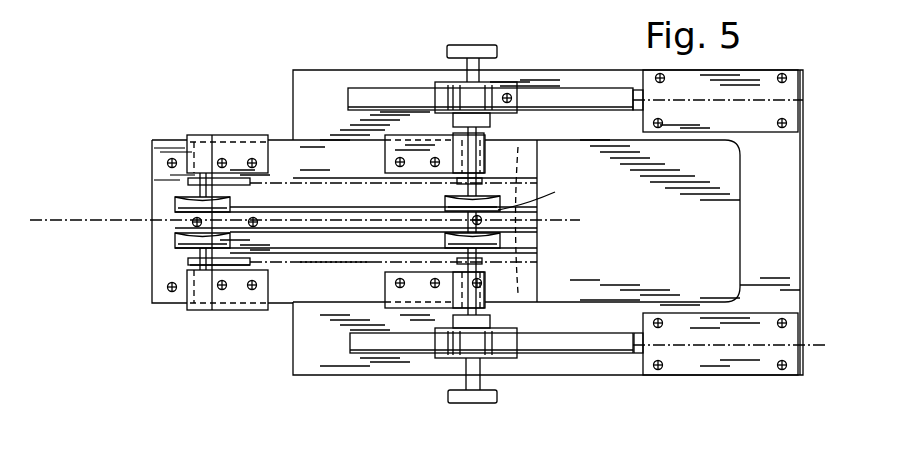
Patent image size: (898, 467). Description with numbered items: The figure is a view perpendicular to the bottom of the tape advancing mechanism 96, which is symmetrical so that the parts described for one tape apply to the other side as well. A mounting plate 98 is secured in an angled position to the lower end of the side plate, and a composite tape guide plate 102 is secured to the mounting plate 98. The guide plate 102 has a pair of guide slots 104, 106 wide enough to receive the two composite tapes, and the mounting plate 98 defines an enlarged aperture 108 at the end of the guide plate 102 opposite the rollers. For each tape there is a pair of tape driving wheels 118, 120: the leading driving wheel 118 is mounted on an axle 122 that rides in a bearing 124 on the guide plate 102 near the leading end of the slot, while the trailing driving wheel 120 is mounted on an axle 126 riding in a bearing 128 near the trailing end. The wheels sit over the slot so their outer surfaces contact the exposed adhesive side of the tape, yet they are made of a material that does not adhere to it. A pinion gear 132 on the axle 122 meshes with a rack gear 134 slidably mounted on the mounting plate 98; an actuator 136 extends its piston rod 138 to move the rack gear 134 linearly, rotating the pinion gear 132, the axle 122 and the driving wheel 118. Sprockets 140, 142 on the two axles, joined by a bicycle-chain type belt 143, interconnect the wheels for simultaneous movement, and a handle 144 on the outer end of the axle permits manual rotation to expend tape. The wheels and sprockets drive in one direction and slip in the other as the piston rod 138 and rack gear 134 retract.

The tape advancing mechanism 96 is at (150, 79).
The mounting plate 98 is at (803, 172).
The composite tape guide plate 102 is at (152, 177).
The guide slot 104 is at (307, 202).
The guide slot 106 is at (335, 252).
The enlarged aperture 108 is at (705, 257).
The tape driving wheel 118 is at (498, 248).
The tape driving wheel 120 is at (173, 202).
The axle 122 is at (480, 78).
The bearing 124 is at (408, 140).
The axle 126 is at (195, 192).
The bearing 128 is at (198, 140).
The pinion gear 132 is at (490, 124).
The rack gear 134 is at (578, 100).
The actuator 136 is at (750, 78).
The piston rod 138 is at (636, 112).
The sprocket 140 is at (500, 266).
The sprocket 142 is at (215, 262).
The belt 143 is at (373, 260).
The handle 144 is at (487, 44).